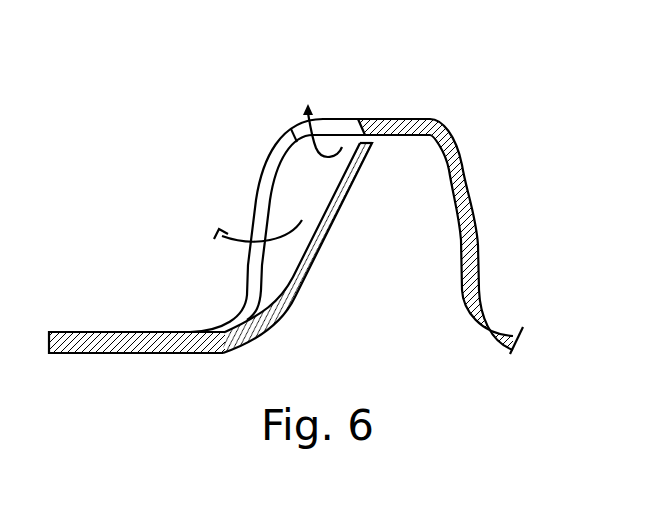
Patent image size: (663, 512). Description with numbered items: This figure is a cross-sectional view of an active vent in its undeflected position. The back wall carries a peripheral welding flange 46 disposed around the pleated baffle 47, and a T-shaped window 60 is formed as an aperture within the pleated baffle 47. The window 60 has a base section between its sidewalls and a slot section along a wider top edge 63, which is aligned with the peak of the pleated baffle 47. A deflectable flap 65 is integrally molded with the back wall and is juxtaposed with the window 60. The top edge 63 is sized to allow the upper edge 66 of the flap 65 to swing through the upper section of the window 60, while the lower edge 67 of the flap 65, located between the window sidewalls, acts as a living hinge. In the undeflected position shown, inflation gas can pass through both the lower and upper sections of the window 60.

The peripheral welding flange 46 is at (87, 353).
The pleated baffle 47 is at (465, 178).
The T-shaped window 60 is at (252, 180).
The top edge 63 is at (351, 118).
The deflectable flap 65 is at (346, 203).
The upper edge of flap 66 is at (375, 143).
The lower edge of flap 67 is at (224, 345).